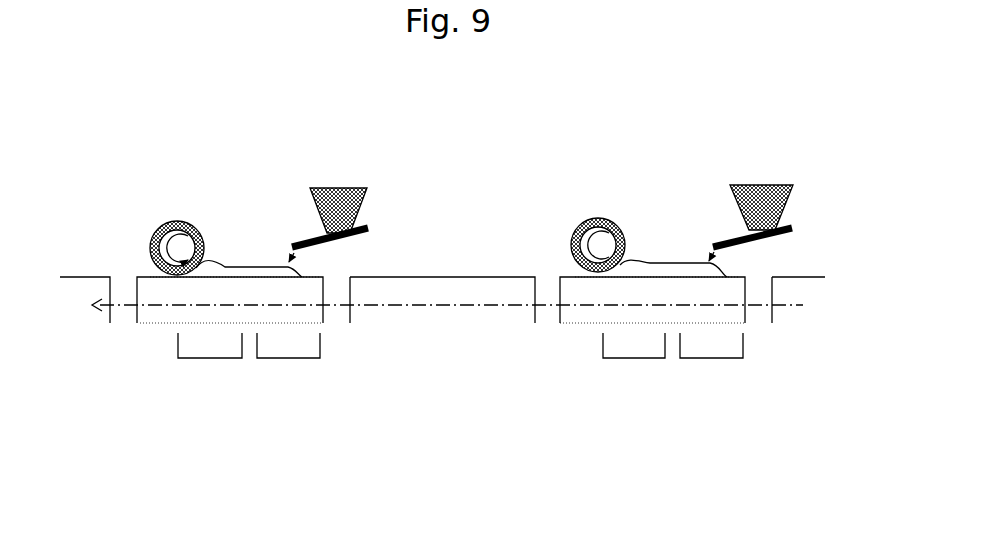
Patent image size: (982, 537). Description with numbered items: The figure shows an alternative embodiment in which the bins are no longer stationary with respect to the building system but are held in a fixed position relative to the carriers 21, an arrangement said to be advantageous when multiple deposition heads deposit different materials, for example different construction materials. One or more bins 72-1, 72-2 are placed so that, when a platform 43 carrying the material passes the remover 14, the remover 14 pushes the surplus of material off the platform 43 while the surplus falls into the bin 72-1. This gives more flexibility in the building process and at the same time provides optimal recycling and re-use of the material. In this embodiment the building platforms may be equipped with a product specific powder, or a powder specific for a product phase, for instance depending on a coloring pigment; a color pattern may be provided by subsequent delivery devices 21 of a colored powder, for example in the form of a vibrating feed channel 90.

The remover 14 is at (173, 222).
The carrier 21 is at (155, 328).
The platform 43 is at (566, 270).
The bin 72-1 is at (202, 362).
The bin 72-2 is at (306, 362).
The vibrating feed channel 90 is at (291, 238).